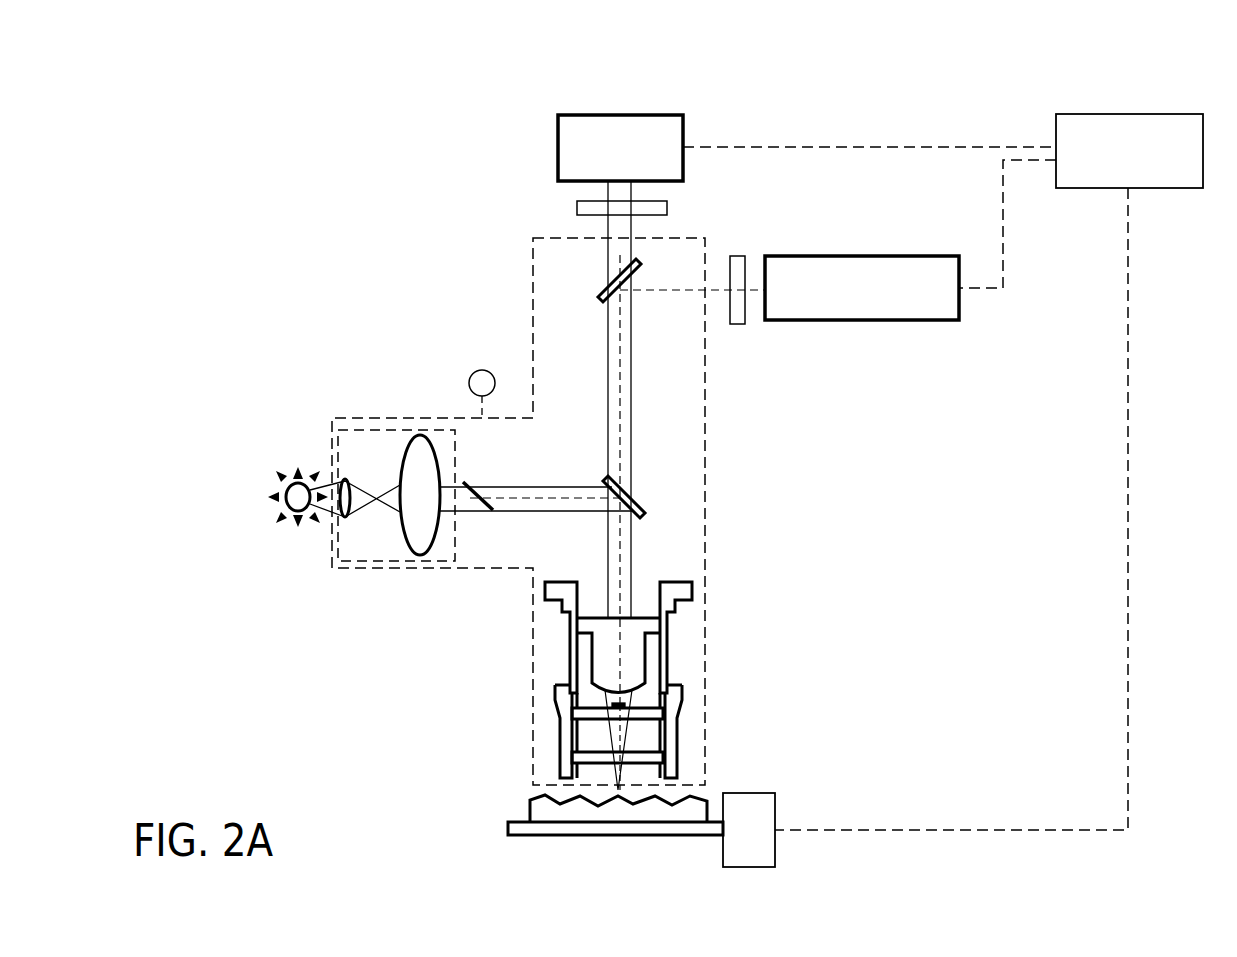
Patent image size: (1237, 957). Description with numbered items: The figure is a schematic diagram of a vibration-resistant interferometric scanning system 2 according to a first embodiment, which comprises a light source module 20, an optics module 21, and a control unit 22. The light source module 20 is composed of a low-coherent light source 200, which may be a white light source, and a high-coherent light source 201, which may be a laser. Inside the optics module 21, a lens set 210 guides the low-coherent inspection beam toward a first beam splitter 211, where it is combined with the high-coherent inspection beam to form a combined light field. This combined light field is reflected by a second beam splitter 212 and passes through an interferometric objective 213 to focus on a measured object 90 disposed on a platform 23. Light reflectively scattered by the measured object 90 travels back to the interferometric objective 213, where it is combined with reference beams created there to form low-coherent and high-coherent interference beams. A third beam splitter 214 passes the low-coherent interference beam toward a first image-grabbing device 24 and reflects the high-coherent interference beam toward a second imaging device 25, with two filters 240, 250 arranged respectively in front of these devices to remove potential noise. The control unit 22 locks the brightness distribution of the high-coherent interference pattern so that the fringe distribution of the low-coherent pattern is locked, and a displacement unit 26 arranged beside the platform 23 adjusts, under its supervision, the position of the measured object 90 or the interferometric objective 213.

The vibration-resistant interferometric scanning system 2 is at (313, 125).
The light source module 20 is at (196, 430).
The optics module 21 is at (513, 208).
The control unit 22 is at (1129, 151).
The platform 23 is at (512, 835).
The first image-grabbing device 24 is at (620, 148).
The second imaging device 25 is at (862, 288).
The displacement unit 26 is at (749, 830).
The measured object 90 is at (532, 810).
The low-coherent light source 200 is at (298, 478).
The high-coherent light source 201 is at (469, 383).
The lens set 210 is at (368, 568).
The first beam splitter 211 is at (490, 510).
The second beam splitter 212 is at (640, 518).
The interferometric objective 213 is at (552, 668).
The third beam splitter 214 is at (603, 300).
The filter 240 is at (667, 210).
The filter 250 is at (740, 325).